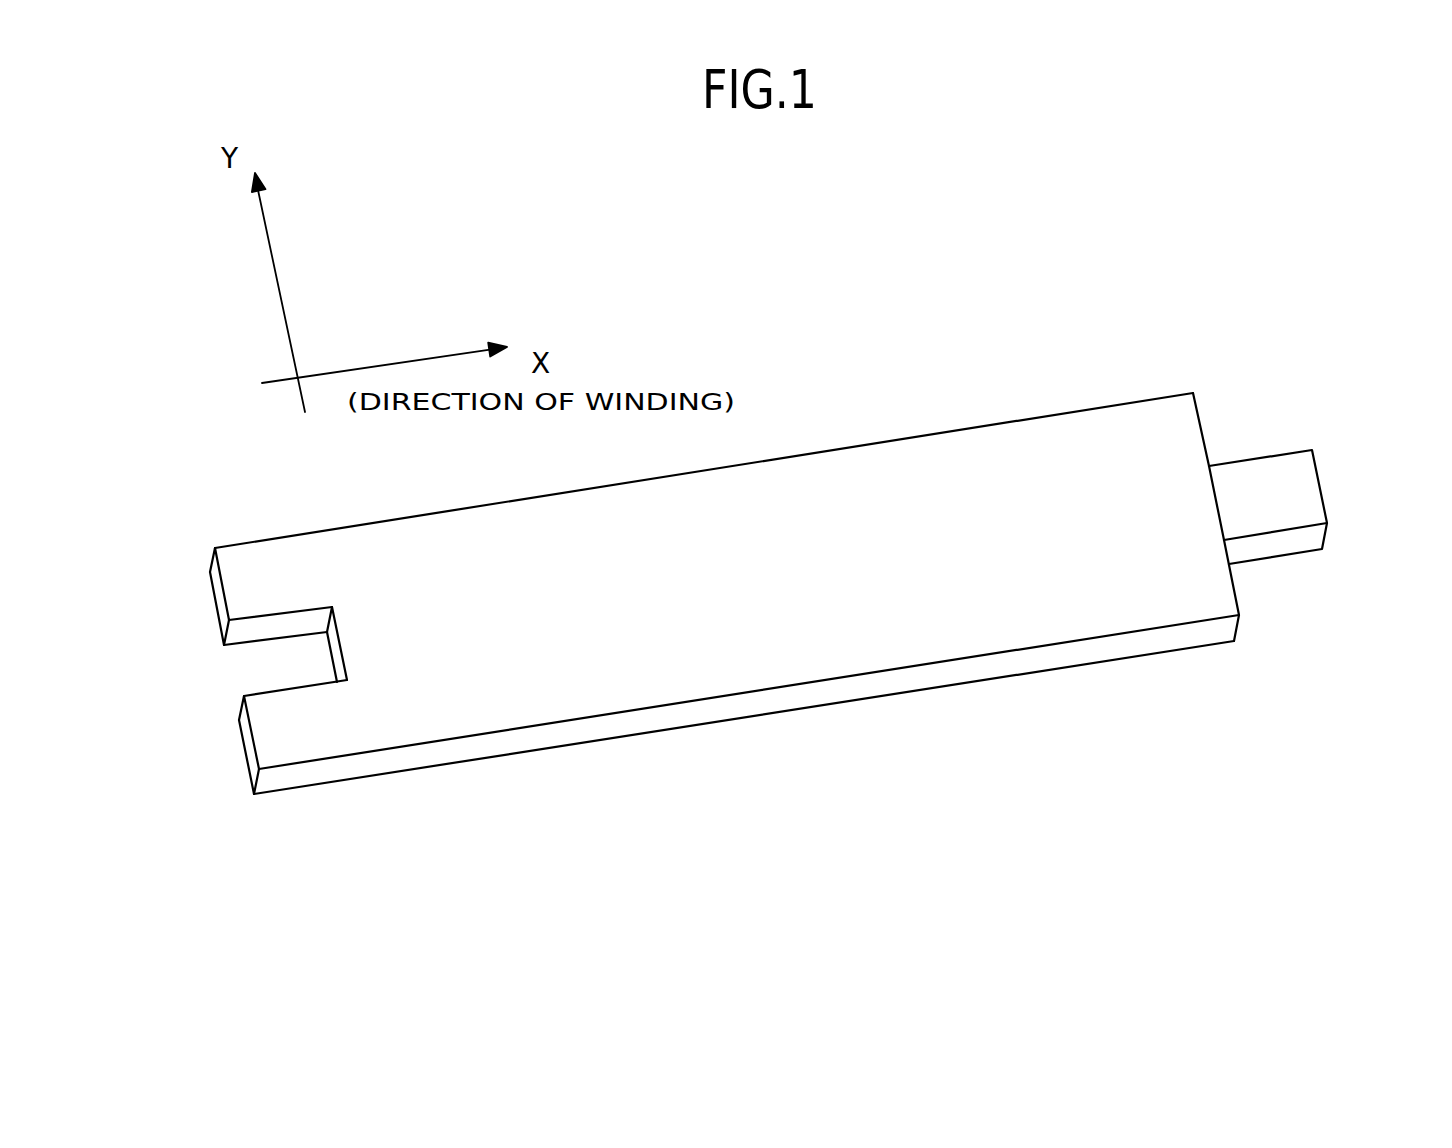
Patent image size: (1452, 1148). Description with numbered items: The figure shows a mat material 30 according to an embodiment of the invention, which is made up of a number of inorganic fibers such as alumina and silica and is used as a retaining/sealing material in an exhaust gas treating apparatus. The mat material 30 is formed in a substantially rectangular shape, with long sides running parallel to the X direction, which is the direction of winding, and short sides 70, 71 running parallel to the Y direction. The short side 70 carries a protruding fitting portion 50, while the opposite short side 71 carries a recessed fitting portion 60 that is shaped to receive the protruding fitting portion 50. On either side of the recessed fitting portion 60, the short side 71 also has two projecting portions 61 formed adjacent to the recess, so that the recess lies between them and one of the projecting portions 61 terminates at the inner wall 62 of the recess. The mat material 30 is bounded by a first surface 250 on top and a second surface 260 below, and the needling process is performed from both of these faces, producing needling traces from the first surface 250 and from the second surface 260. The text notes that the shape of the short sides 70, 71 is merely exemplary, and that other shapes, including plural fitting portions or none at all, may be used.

The mat material 30 is at (927, 388).
The first surface 250 is at (1182, 417).
The second surface 260 is at (1013, 677).
The short side 70 is at (1332, 380).
The protruding fitting portion 50 is at (1257, 472).
The short side 71 is at (203, 533).
The projecting portion 61 is at (242, 578).
The recessed fitting portion 60 is at (283, 665).
The slit bottom 62 is at (343, 645).